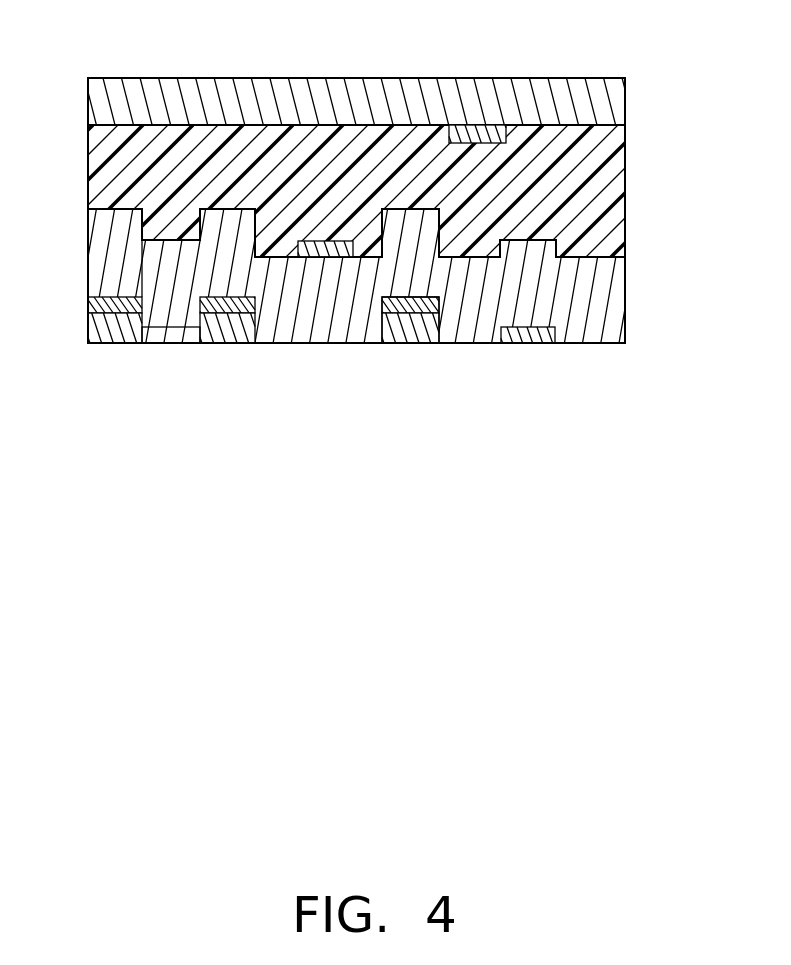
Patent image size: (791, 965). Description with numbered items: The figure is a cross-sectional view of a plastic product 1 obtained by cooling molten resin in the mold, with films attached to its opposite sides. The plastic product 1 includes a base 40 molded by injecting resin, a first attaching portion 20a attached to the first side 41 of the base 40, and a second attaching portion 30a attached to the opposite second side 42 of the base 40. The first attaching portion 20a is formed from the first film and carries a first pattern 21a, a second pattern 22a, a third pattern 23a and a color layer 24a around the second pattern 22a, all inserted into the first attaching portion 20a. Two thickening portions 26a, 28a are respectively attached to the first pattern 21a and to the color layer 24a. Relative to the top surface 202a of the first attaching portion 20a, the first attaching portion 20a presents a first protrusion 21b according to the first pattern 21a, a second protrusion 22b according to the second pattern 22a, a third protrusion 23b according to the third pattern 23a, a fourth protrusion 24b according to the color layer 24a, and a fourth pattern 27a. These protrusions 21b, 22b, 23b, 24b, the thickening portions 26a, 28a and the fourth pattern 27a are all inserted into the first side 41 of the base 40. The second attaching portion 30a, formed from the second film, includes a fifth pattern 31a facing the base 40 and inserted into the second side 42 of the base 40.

The plastic product 1 is at (541, 50).
The first attaching portion 20a is at (278, 328).
The first pattern 21a is at (382, 298).
The first protrusion 21b is at (430, 218).
The second pattern 22a is at (160, 333).
The second protrusion 22b is at (128, 243).
The third pattern 23a is at (532, 335).
The third protrusion 23b is at (535, 248).
The color layer 24a is at (100, 303).
The fourth protrusion 24b is at (112, 211).
The thickening portion 26a is at (425, 332).
The fourth pattern 27a is at (330, 240).
The thickening portion 28a is at (105, 330).
The second attaching portion 30a is at (155, 105).
The fifth pattern 31a is at (476, 140).
The base 40 is at (108, 172).
The first side 41 is at (600, 250).
The second side 42 is at (97, 129).
The top surface 202a is at (275, 245).